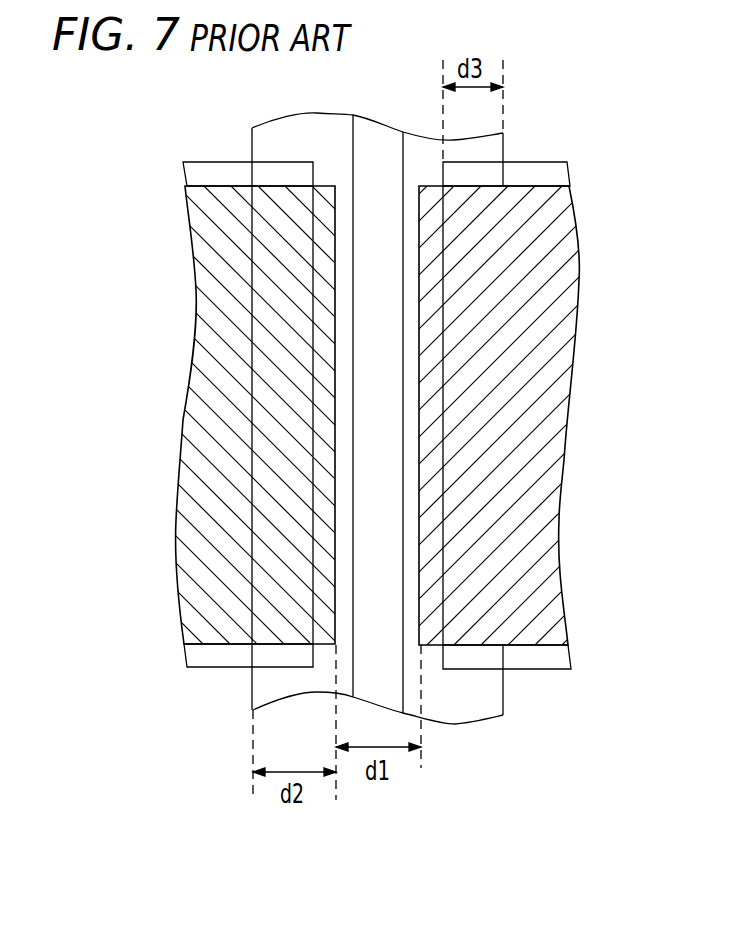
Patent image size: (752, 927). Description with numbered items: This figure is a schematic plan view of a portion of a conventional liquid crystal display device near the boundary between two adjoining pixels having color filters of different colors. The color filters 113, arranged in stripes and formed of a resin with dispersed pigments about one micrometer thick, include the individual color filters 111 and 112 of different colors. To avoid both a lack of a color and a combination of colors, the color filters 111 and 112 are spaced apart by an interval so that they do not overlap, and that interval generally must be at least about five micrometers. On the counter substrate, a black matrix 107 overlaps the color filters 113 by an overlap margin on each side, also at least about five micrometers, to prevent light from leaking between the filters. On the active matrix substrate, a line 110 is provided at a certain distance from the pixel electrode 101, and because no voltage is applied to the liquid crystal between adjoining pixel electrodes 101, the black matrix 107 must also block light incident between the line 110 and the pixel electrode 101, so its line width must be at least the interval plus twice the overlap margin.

The pixel electrode 101 is at (210, 160).
The black matrix 107 is at (303, 137).
The line 110 is at (350, 137).
The color filter 111 is at (555, 348).
The color filter 112 is at (200, 360).
The color filters 113 is at (542, 420).